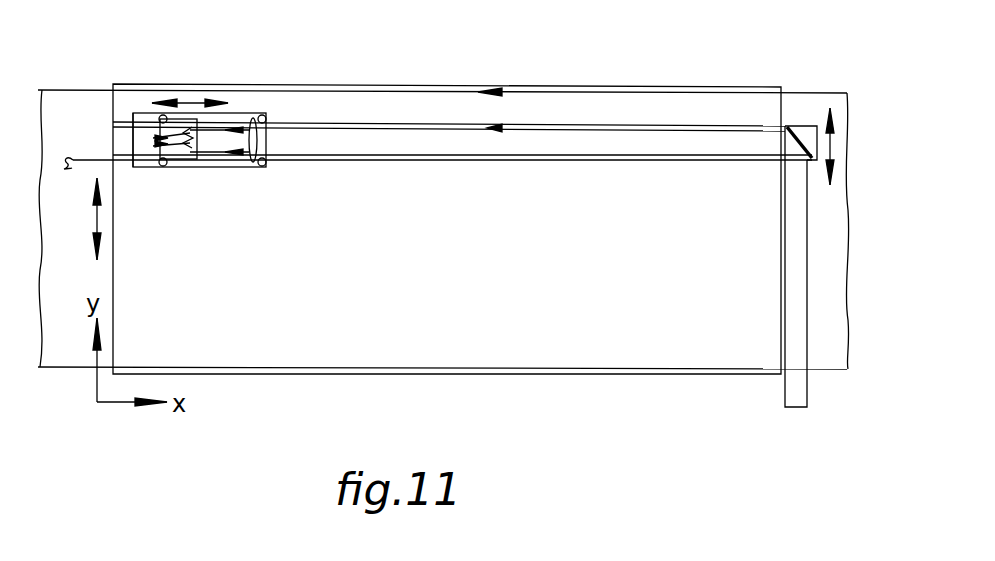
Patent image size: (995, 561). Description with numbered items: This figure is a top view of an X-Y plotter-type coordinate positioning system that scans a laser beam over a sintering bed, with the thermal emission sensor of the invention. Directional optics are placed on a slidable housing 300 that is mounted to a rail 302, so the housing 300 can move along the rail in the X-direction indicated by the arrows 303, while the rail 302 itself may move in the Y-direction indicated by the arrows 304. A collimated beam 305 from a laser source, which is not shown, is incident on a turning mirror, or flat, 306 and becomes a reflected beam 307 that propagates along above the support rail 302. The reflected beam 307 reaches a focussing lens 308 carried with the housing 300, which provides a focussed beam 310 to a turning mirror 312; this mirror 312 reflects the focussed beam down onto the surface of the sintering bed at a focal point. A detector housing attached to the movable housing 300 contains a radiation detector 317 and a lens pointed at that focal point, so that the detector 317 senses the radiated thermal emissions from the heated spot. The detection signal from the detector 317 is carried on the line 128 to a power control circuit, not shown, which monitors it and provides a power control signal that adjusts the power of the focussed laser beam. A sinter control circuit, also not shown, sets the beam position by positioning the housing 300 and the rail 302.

The line 128 is at (98, 157).
The slidable housing 300 is at (243, 113).
The rail 302 is at (445, 160).
The arrows 303 is at (183, 100).
The arrows 304 is at (95, 223).
The collimated beam 305 is at (800, 395).
The turning mirror 306 is at (808, 130).
The reflected beam 307 is at (557, 140).
The focussing lens 308 is at (256, 142).
The focussed beam 310 is at (216, 140).
The turning mirror 312 is at (188, 160).
The radiation detector 317 is at (140, 113).